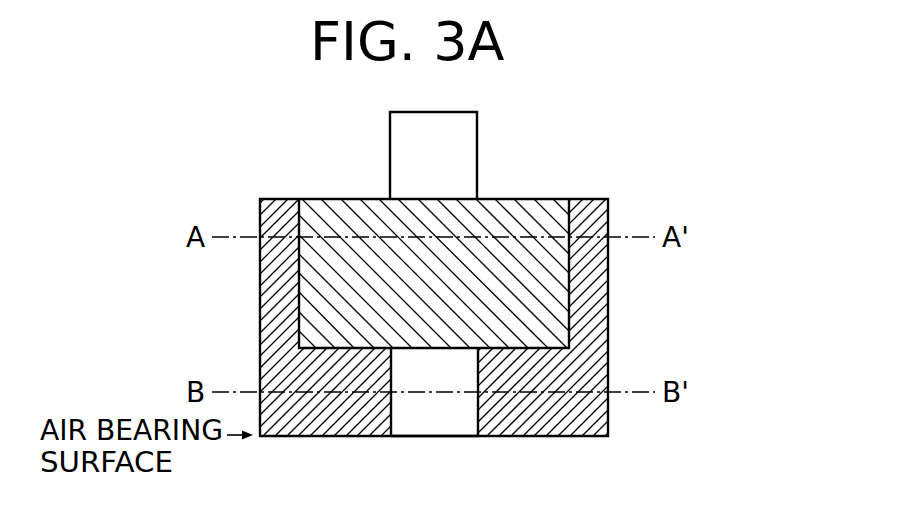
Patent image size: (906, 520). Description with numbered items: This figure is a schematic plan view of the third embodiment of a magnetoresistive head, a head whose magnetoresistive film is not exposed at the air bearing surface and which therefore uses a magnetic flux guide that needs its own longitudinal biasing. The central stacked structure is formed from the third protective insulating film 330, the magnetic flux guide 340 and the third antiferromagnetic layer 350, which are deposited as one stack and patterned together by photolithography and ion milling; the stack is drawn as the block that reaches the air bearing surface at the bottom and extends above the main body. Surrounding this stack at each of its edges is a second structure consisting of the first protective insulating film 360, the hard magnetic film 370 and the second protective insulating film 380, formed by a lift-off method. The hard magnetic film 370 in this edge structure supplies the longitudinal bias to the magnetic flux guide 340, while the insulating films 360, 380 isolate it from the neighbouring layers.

The third protective insulating film 330 is at (529, 308).
The magnetic flux guide 340 is at (529, 308).
The third antiferromagnetic layer 350 is at (460, 154).
The first protective insulating film 360 is at (553, 317).
The hard magnetic film 370 is at (553, 317).
The second protective insulating film 380 is at (608, 308).